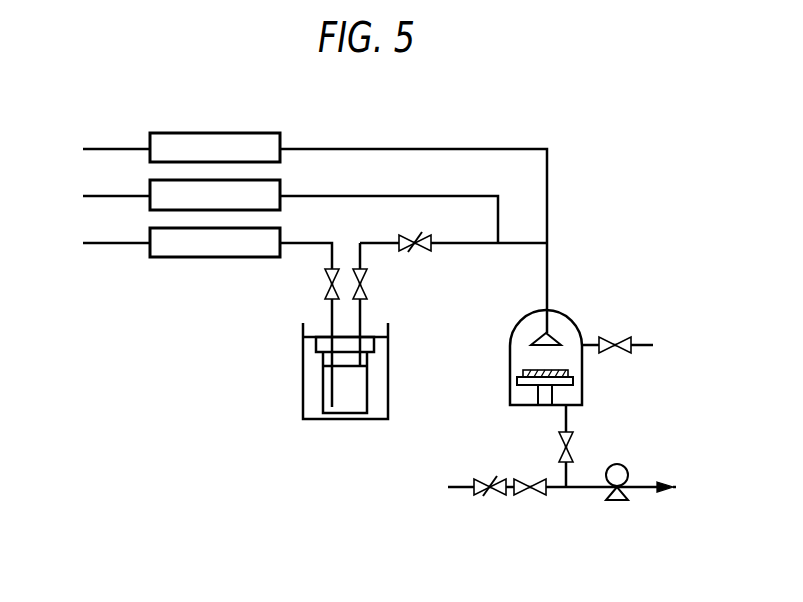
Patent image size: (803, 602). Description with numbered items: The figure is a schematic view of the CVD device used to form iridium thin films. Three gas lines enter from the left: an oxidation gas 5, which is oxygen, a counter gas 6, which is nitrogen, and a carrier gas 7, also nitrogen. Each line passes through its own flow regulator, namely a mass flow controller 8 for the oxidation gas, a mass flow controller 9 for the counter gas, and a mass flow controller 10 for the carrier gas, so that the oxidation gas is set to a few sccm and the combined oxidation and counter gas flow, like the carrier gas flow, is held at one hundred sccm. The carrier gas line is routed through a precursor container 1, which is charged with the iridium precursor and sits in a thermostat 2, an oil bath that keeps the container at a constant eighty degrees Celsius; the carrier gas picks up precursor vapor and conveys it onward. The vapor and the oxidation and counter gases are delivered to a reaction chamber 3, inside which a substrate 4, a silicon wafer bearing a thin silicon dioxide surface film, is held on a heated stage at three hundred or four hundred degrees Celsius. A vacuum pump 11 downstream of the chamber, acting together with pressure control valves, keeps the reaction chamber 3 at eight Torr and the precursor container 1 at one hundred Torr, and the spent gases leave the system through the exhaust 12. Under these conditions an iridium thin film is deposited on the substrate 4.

The precursor container 1 is at (368, 383).
The thermostat 2 is at (346, 421).
The reaction chamber 3 is at (570, 323).
The substrate 4 is at (522, 372).
The oxidation gas 5 is at (301, 235).
The counter gas 6 is at (277, 213).
The carrier gas 7 is at (301, 319).
The mass flow controller 8 is at (282, 147).
The mass flow controller 9 is at (282, 194).
The mass flow controller 10 is at (282, 242).
The vacuum pump 11 is at (617, 503).
The exhaust 12 is at (689, 487).